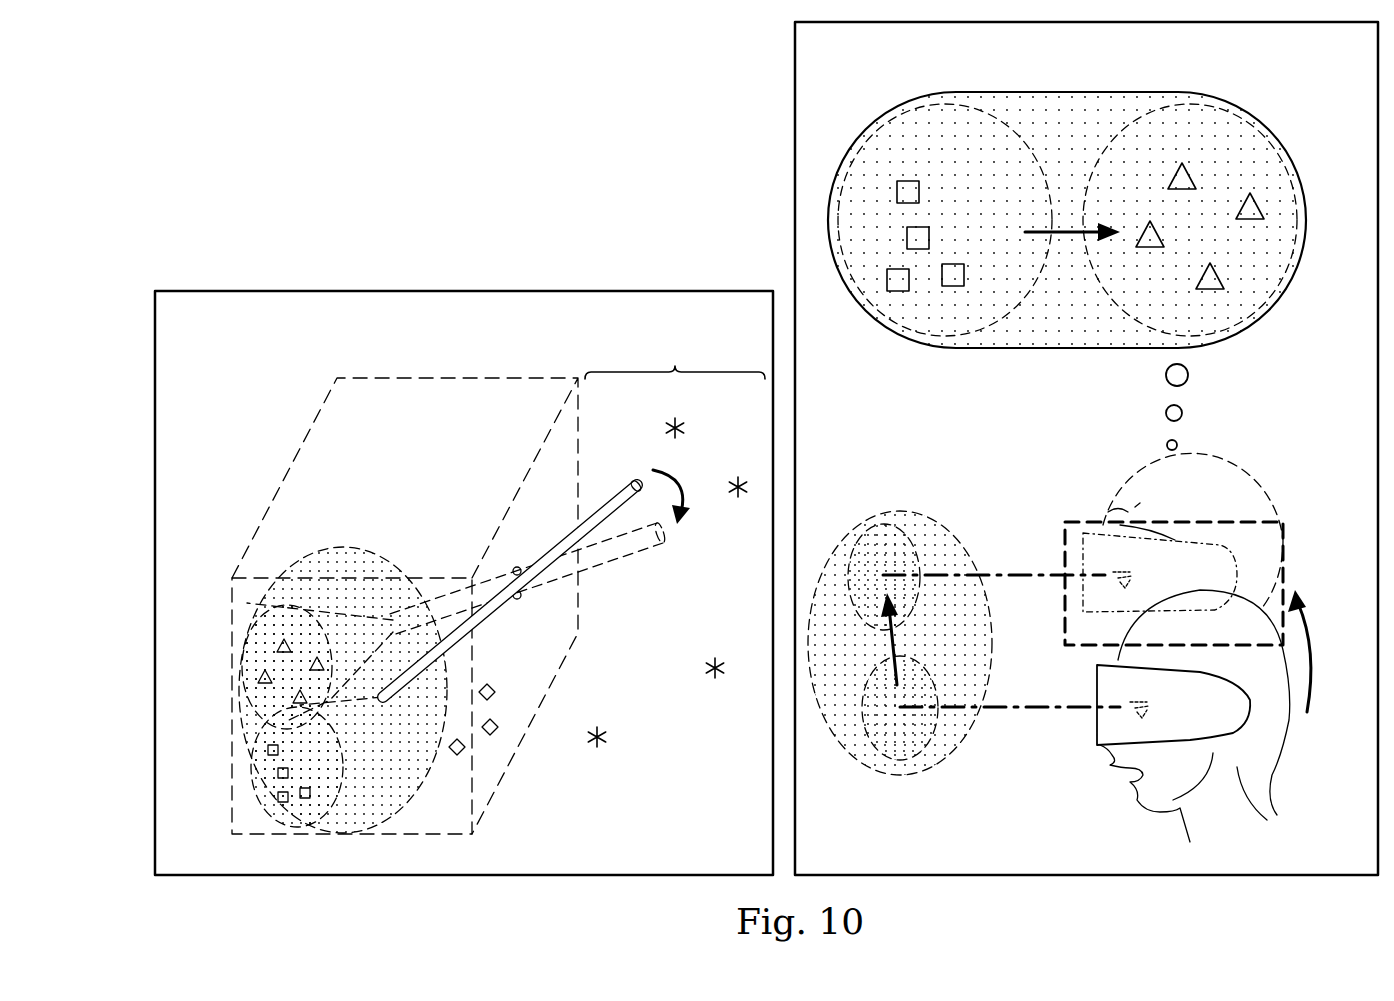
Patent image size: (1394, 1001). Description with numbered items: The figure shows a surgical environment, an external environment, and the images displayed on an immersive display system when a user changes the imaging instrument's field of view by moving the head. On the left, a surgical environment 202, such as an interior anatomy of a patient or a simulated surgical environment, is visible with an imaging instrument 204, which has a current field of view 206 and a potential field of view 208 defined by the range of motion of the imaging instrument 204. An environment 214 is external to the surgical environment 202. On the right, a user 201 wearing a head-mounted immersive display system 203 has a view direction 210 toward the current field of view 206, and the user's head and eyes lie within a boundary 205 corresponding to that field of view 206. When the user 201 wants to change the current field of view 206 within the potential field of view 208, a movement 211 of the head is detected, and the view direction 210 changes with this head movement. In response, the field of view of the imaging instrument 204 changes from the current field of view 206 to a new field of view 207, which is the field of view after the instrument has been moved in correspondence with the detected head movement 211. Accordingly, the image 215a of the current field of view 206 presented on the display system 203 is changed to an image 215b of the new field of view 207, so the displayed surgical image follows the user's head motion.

The user 201 is at (1218, 462).
The surgical environment 202 is at (580, 600).
The head-mounted immersive display system 203 is at (1188, 545).
The imaging instrument 204 is at (631, 479).
The boundary 205 is at (1065, 560).
The current field of view 206 is at (252, 760).
The field of view 207 is at (247, 676).
The potential field of view 208 is at (350, 548).
The view direction 210 is at (1045, 712).
The head movement 211 is at (1307, 655).
The external environment 214 is at (675, 354).
The image of the current field of view 215a is at (882, 137).
The image of the changed field of view 215b is at (1250, 137).